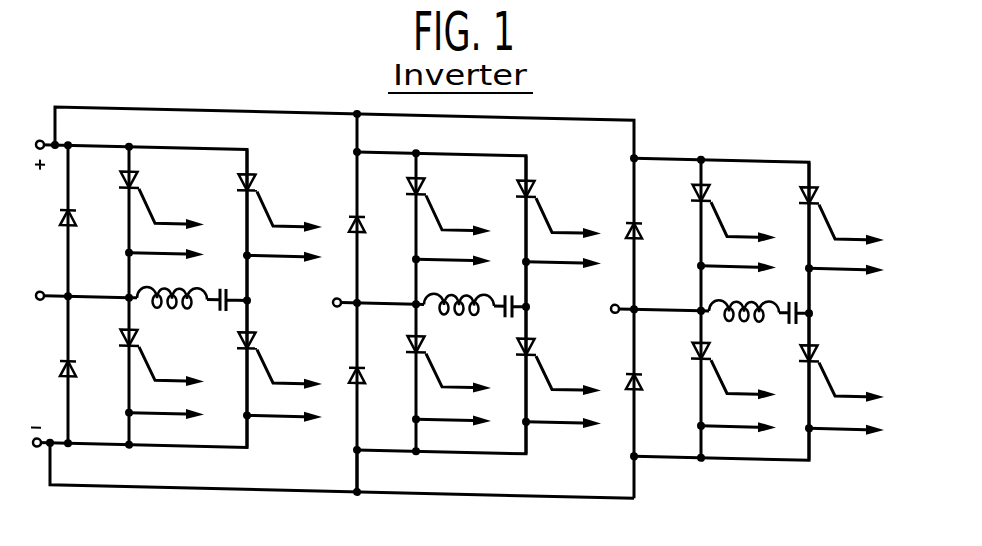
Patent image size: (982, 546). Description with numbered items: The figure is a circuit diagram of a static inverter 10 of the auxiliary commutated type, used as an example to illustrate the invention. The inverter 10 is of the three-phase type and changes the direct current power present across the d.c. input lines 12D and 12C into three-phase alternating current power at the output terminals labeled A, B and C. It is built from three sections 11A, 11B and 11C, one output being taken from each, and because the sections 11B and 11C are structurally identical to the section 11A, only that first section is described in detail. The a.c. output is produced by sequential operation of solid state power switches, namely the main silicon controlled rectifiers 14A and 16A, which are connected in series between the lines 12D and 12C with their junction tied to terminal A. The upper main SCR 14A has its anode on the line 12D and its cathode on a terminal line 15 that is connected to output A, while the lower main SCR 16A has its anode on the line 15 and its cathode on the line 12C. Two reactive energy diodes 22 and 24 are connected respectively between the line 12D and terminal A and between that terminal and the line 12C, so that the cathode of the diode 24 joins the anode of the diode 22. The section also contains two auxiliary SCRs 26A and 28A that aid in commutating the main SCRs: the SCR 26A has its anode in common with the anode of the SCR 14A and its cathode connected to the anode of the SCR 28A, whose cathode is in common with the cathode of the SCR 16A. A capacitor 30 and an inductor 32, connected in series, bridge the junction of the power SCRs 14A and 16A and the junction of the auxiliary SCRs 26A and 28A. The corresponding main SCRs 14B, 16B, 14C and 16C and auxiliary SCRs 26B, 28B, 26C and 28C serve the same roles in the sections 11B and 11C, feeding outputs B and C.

The static inverter 10 is at (672, 120).
The inverter section 11A is at (205, 136).
The inverter section 11B is at (488, 136).
The inverter section 11C is at (770, 135).
The d.c. input line 12D is at (42, 141).
The d.c. input line 12C is at (37, 449).
The main SCR 14A is at (121, 183).
The main SCR 14B is at (408, 183).
The main SCR 14C is at (693, 183).
The terminal line 15 is at (96, 293).
The main SCR 16A is at (121, 341).
The main SCR 16B is at (408, 341).
The main SCR 16C is at (693, 341).
The reactive energy diode 22 is at (76, 218).
The reactive energy diode 24 is at (75, 374).
The auxiliary SCR 26A is at (252, 165).
The auxiliary SCR 26B is at (532, 165).
The auxiliary SCR 26C is at (815, 168).
The auxiliary SCR 28A is at (252, 328).
The auxiliary SCR 28B is at (532, 328).
The auxiliary SCR 28C is at (815, 328).
The capacitor 30 is at (224, 289).
The inductor 32 is at (183, 288).